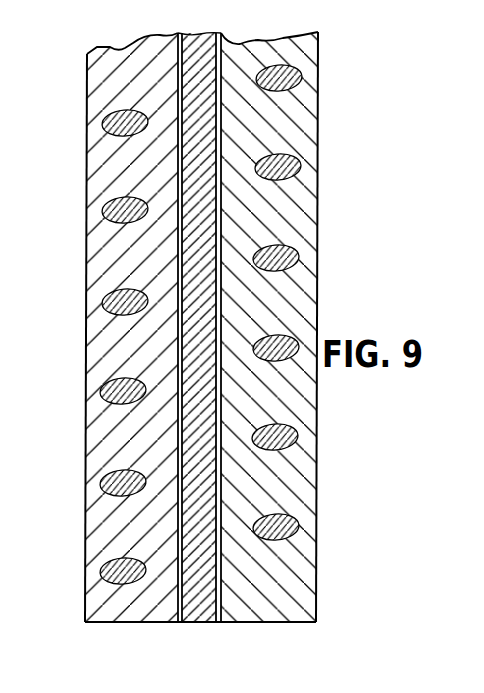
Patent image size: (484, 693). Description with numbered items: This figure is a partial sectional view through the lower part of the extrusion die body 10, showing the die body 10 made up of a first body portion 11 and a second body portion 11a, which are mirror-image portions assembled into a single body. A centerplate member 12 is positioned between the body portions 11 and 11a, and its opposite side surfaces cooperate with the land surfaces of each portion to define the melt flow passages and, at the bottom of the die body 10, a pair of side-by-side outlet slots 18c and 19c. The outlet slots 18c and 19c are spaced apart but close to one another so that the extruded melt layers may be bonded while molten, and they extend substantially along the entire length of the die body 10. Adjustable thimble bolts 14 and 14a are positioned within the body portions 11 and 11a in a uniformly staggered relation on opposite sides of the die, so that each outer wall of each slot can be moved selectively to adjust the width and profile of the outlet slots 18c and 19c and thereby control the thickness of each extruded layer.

The die body 10 is at (195, 315).
The first body portion 11 is at (294, 315).
The second body portion 11a is at (99, 268).
The centerplate member 12 is at (106, 626).
The thimble bolt 14 is at (301, 73).
The thimble bolt 14a is at (108, 117).
The outlet slot 18c is at (223, 67).
The outlet slot 19c is at (181, 60).